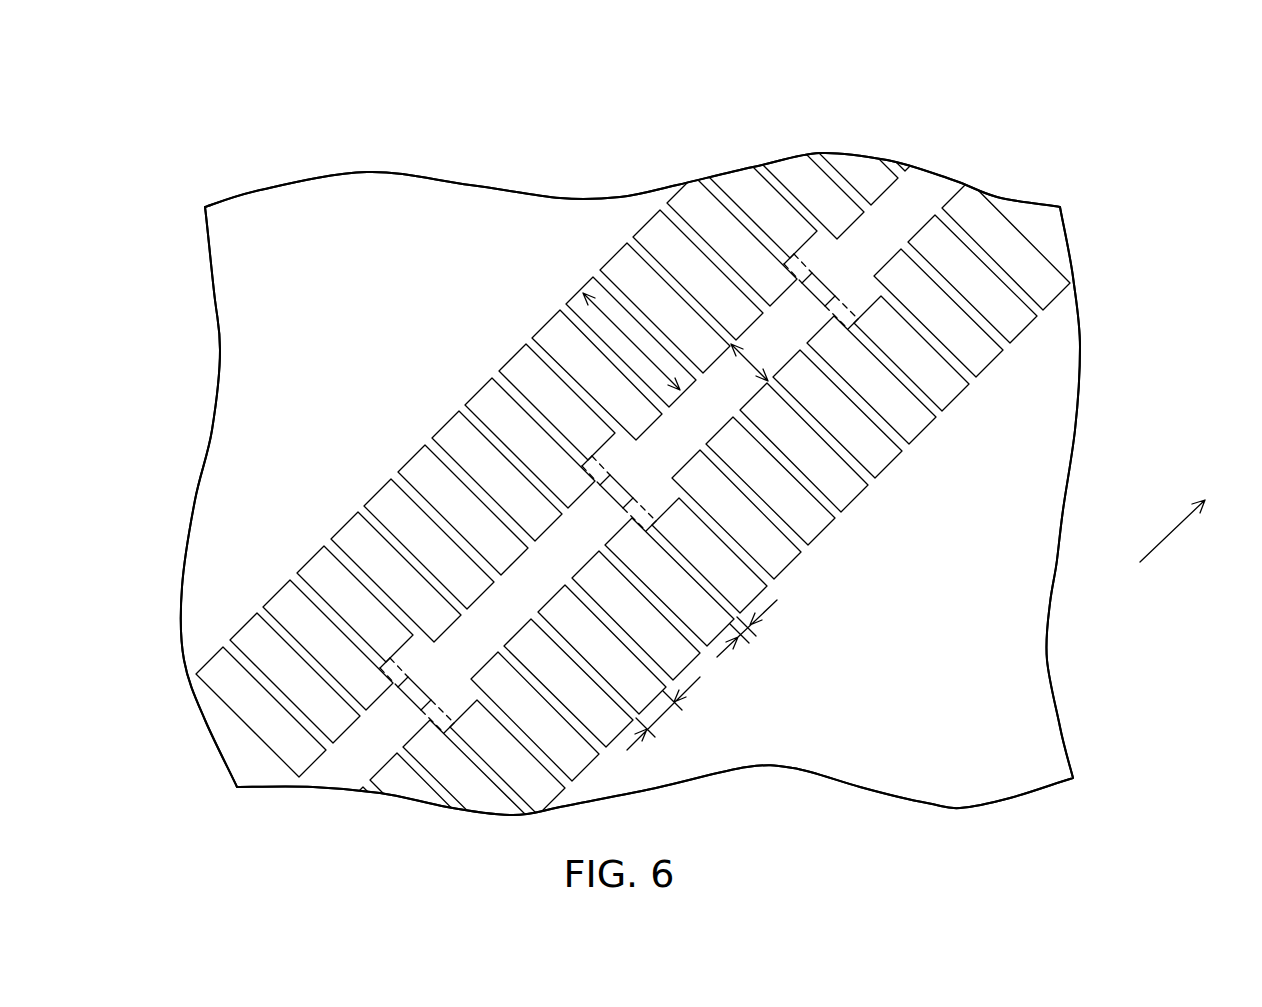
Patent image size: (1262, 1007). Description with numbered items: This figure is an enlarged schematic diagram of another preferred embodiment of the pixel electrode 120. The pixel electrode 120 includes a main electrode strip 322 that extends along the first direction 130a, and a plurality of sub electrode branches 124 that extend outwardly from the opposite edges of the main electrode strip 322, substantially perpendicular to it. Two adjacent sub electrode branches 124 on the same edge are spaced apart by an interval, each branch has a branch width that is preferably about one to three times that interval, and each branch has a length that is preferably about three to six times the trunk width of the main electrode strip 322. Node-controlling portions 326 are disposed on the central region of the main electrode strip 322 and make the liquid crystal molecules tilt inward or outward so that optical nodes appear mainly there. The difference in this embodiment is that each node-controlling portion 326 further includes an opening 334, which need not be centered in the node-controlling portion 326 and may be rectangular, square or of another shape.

The pixel electrode 120 is at (1087, 102).
The sub electrode branches 124 is at (697, 207).
The main electrode strip 322 is at (919, 184).
The node-controlling portion 326 is at (387, 670).
The opening 334 is at (921, 428).
The first direction 130a is at (1192, 511).